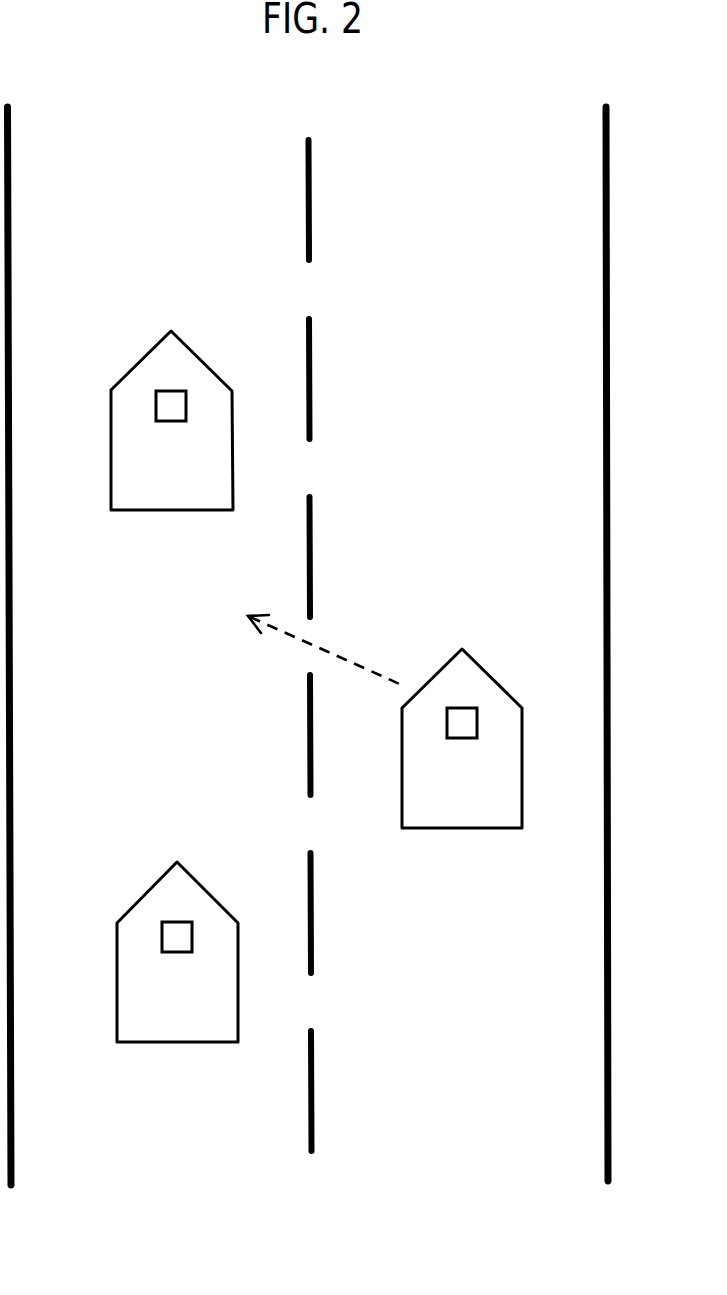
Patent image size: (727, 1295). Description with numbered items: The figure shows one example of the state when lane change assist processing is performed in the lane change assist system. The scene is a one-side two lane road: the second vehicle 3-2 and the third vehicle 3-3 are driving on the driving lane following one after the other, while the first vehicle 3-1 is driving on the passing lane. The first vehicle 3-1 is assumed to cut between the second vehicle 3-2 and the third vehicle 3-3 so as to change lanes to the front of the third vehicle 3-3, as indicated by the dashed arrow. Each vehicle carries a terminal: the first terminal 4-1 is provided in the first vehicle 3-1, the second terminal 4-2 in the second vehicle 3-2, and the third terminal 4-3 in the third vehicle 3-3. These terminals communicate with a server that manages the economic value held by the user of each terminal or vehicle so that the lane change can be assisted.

The first vehicle 3-1 is at (477, 660).
The second vehicle 3-2 is at (184, 343).
The third vehicle 3-3 is at (190, 872).
The first terminal 4-1 is at (447, 723).
The second terminal 4-2 is at (156, 403).
The third terminal 4-3 is at (165, 953).